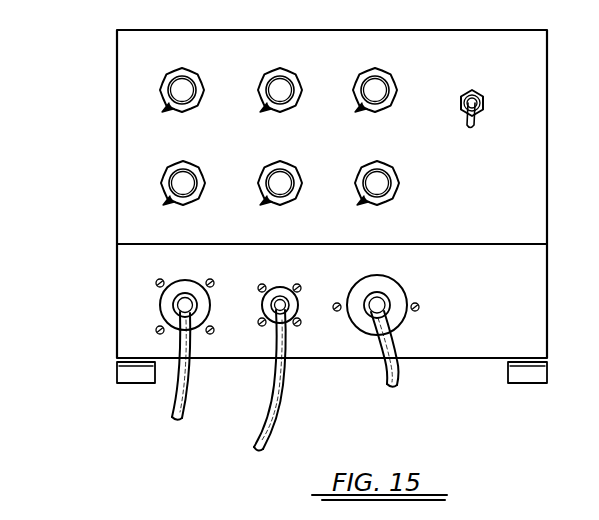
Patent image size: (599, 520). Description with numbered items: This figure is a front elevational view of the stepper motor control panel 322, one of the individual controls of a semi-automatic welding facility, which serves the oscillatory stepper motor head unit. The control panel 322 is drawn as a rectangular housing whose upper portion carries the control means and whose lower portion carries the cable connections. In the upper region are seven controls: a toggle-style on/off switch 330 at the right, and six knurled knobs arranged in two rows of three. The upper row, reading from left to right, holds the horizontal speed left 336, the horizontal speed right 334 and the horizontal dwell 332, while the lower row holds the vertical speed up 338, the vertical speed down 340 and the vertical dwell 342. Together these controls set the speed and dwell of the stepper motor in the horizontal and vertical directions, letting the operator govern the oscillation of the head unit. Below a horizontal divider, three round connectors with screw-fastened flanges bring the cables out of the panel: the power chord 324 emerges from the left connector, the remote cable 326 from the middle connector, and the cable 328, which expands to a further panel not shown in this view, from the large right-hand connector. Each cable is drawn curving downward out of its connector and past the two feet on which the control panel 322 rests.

The stepper motor control panel 322 is at (108, 85).
The power chord 324 is at (178, 390).
The remote cable 326 is at (262, 414).
The cable 328 is at (380, 378).
The on/off switch 330 is at (490, 78).
The horizontal dwell 332 is at (383, 93).
The horizontal speed right 334 is at (287, 93).
The horizontal speed left 336 is at (190, 95).
The vertical speed up 338 is at (183, 185).
The vertical speed down 340 is at (280, 185).
The vertical dwell 342 is at (378, 185).